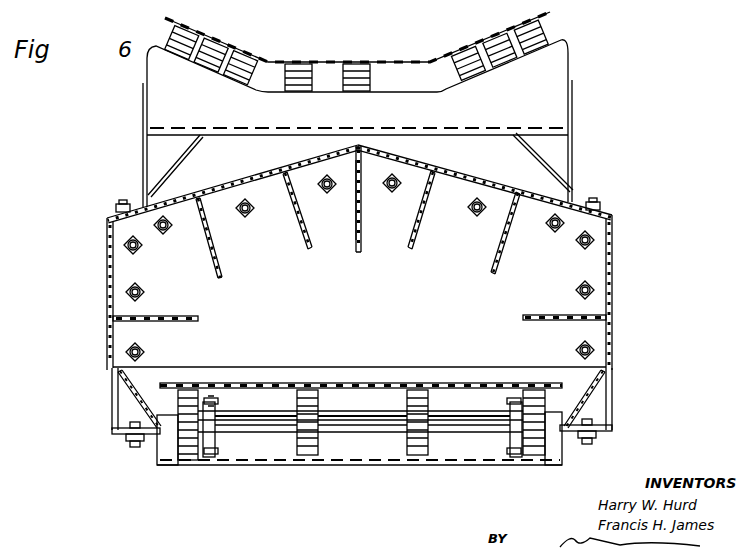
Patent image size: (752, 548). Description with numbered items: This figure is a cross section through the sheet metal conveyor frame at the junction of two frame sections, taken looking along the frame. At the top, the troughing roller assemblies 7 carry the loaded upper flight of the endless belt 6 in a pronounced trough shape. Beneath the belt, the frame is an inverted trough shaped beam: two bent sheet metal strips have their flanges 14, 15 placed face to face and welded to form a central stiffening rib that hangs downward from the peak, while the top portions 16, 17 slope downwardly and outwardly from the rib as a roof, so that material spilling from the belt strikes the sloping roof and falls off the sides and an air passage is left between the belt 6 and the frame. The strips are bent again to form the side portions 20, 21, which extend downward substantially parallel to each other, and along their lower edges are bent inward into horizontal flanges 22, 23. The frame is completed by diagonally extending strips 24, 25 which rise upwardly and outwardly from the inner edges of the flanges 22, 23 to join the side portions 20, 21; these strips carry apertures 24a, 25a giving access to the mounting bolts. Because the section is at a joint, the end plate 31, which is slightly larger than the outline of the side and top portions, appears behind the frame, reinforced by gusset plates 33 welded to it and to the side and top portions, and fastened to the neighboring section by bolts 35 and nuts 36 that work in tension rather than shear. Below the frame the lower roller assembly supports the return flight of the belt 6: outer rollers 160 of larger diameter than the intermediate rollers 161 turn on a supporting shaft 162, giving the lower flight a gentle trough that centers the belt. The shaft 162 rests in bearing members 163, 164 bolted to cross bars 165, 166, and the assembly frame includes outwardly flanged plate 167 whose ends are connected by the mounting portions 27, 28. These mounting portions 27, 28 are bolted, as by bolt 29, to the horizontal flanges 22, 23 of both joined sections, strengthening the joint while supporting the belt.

The endless belt 6 is at (356, 62).
The troughing roller assemblies 7 is at (152, 113).
The flange 14 is at (355, 232).
The flange 15 is at (363, 232).
The top portion 16 is at (465, 176).
The top portion 17 is at (236, 182).
The side portion 20 is at (606, 310).
The side portion 21 is at (112, 309).
The horizontal flange 22 is at (613, 420).
The horizontal flange 23 is at (108, 424).
The diagonally extending strip 24 is at (612, 372).
The aperture 24a is at (612, 393).
The diagonally extending strip 25 is at (112, 374).
The aperture 25a is at (125, 397).
The mounting portion 27 is at (564, 442).
The mounting portion 28 is at (126, 442).
The bolt 29 is at (590, 440).
The end plate 31 is at (107, 270).
The gusset plate 33 is at (200, 318).
The bolt 35 is at (137, 288).
The nut 36 is at (166, 230).
The outer roller 160 is at (190, 458).
The intermediate roller 161 is at (308, 460).
The supporting shaft 162 is at (268, 428).
The bearing member 163 is at (216, 440).
The bearing member 164 is at (510, 440).
The cross bar 165 is at (215, 458).
The cross bar 166 is at (513, 458).
The plate 167 is at (450, 454).